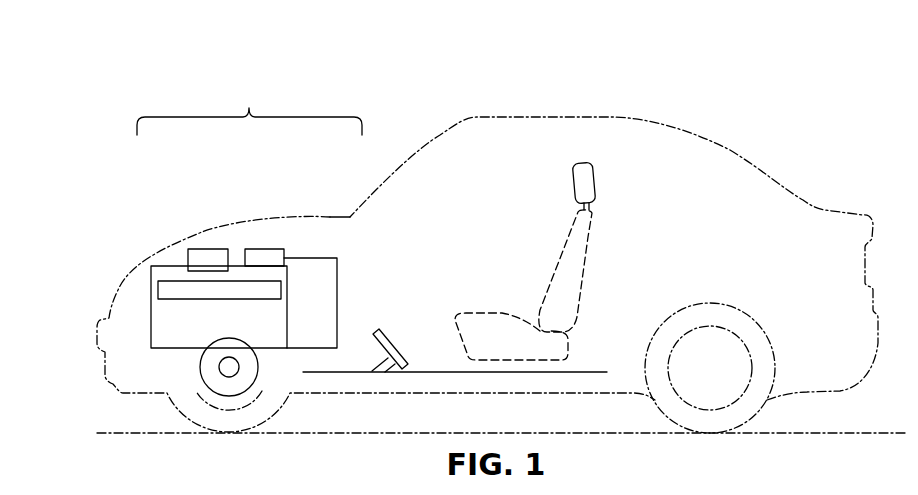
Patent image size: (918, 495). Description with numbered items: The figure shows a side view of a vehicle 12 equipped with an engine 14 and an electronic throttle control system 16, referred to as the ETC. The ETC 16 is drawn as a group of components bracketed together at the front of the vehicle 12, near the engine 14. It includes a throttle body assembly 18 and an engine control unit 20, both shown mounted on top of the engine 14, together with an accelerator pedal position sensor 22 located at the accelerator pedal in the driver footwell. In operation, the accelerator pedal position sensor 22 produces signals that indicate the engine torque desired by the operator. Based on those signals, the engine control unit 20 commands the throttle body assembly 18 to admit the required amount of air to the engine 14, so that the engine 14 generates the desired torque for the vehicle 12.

The vehicle 12 is at (612, 90).
The engine 14 is at (182, 338).
The electronic throttle control system 16 is at (249, 108).
The throttle body assembly 18 is at (210, 256).
The engine control unit 20 is at (265, 254).
The accelerator pedal position sensor 22 is at (392, 322).